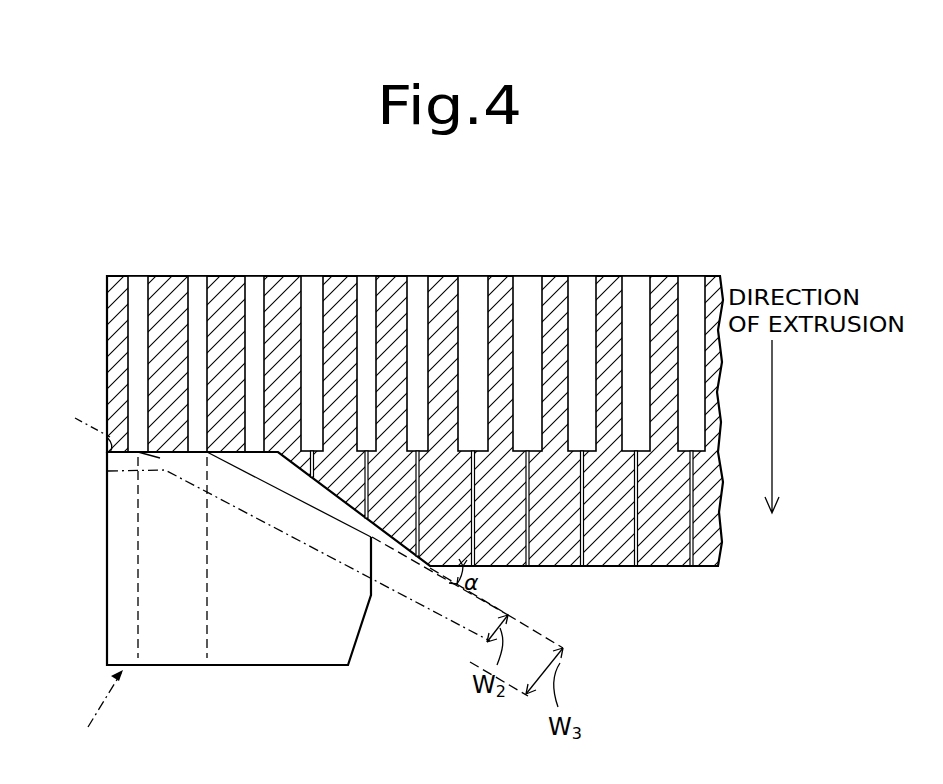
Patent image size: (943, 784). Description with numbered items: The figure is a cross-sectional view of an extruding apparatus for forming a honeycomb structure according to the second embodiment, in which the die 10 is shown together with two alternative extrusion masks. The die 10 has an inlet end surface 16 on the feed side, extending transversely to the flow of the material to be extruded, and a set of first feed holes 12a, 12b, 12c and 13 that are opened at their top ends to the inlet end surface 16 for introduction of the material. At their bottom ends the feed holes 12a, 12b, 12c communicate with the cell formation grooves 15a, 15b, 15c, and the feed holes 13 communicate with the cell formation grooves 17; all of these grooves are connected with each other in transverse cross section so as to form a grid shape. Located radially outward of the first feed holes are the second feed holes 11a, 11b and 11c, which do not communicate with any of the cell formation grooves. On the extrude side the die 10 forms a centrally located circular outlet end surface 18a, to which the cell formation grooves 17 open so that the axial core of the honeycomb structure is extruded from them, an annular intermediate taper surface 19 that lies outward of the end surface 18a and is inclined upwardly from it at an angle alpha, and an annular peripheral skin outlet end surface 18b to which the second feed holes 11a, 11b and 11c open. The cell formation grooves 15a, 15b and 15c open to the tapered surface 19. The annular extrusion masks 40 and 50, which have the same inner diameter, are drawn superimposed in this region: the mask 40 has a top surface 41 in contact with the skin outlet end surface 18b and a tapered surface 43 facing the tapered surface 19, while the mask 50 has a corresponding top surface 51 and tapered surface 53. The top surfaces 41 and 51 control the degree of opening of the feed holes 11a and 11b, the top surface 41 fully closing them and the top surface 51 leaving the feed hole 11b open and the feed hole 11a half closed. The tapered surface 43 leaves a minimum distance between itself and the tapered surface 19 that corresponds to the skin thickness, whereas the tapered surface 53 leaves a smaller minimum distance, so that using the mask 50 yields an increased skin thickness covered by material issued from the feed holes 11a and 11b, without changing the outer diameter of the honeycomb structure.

The die 10 is at (95, 279).
The second feed hole 11a is at (138, 283).
The second feed hole 11b is at (198, 285).
The second feed hole 11c is at (255, 283).
The first feed hole 12a is at (313, 283).
The first feed hole 12b is at (367, 285).
The first feed hole 12c is at (418, 283).
The first feed holes 13 is at (470, 283).
The cell formation groove 15a is at (311, 478).
The cell formation groove 15b is at (365, 518).
The cell formation groove 15c is at (420, 560).
The inlet end surface 16 is at (663, 283).
The cell formation grooves 17 is at (474, 558).
The outlet end surface 18a is at (677, 568).
The skin outlet end surface 18b is at (106, 460).
The intermediate taper surface 19 is at (423, 594).
The extrusion mask 40 is at (98, 673).
The top surface 41 is at (167, 450).
The tapered surface 43 is at (245, 468).
The extrusion mask 50 is at (298, 632).
The top surface 51 is at (78, 426).
The tapered surface 53 is at (108, 472).